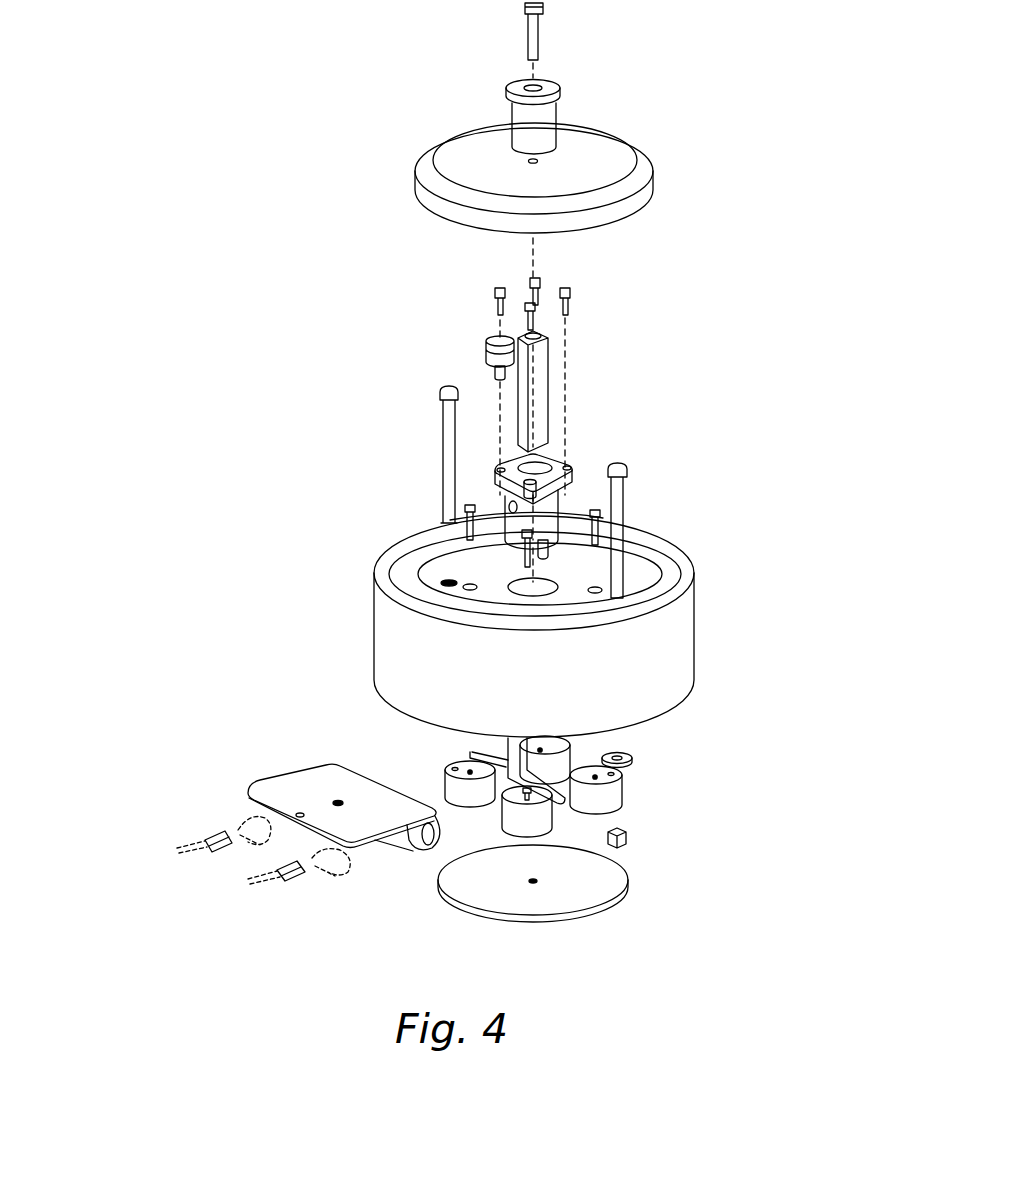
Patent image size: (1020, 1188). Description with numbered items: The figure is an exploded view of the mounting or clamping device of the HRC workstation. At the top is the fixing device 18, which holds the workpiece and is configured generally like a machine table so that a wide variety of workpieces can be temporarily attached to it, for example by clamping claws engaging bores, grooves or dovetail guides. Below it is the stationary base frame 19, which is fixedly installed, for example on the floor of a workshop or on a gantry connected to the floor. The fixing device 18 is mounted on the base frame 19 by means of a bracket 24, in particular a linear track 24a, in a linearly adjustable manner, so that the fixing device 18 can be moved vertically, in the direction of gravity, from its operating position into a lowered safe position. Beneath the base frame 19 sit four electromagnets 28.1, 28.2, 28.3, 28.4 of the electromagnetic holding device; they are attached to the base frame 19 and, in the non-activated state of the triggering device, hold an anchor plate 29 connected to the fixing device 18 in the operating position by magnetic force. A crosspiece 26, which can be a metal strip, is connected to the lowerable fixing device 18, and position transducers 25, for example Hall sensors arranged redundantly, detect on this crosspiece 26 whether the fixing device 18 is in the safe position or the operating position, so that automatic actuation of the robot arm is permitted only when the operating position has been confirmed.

The fixing device 18 is at (588, 157).
The base frame 19 is at (400, 613).
The bracket 24 is at (565, 468).
The linear track 24a is at (639, 391).
The position transducer 25 is at (280, 866).
The crosspiece 26 is at (470, 757).
The electromagnet 28.1 is at (452, 790).
The electromagnet 28.2 is at (567, 760).
The electromagnet 28.3 is at (598, 800).
The electromagnet 28.4 is at (520, 815).
The anchor plate 29 is at (575, 900).